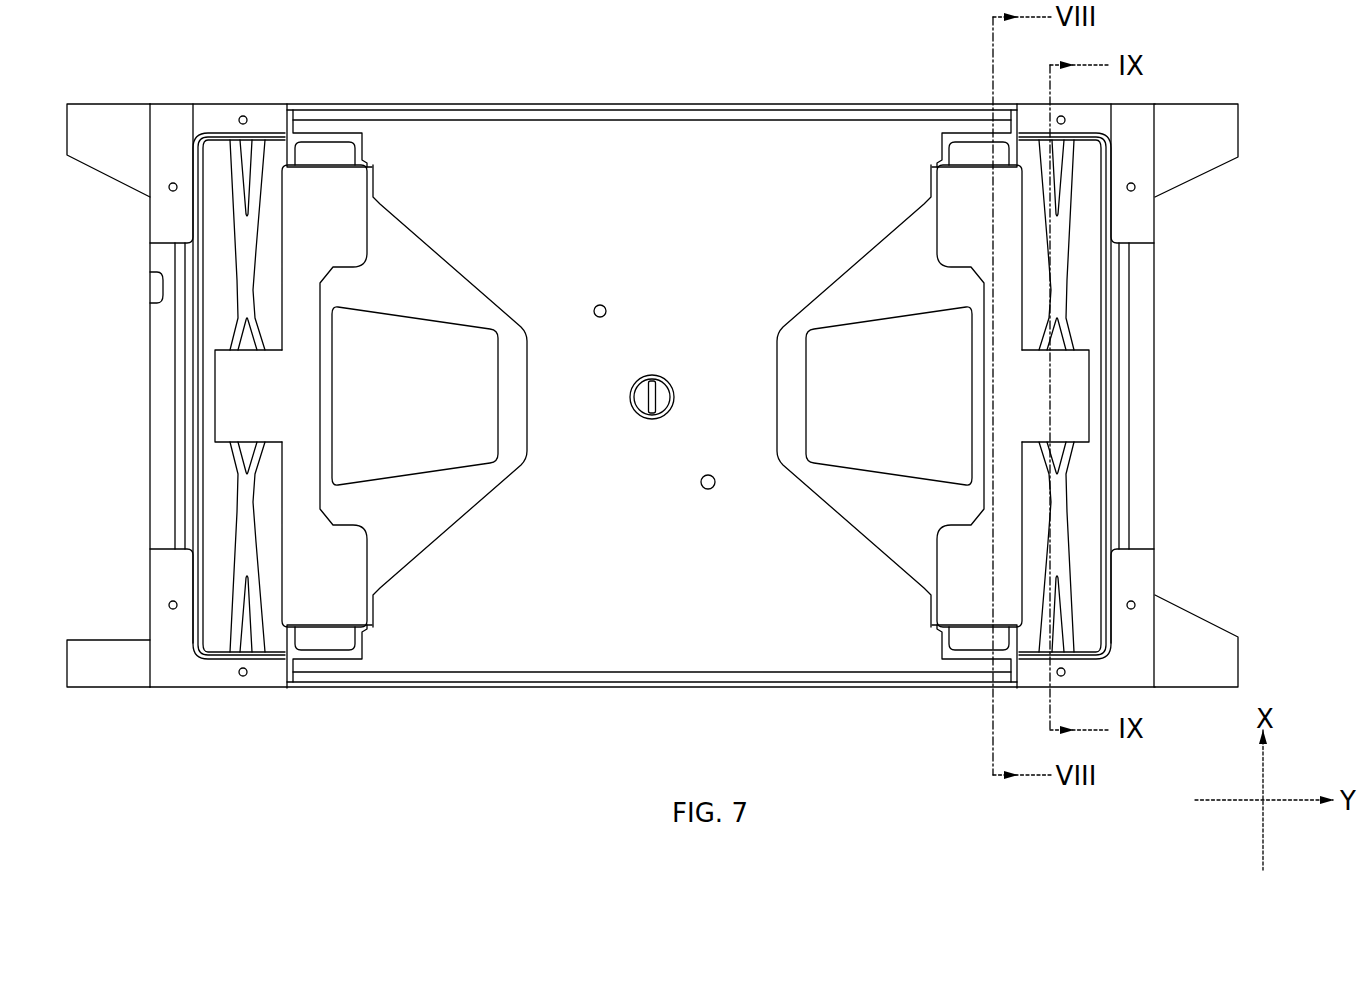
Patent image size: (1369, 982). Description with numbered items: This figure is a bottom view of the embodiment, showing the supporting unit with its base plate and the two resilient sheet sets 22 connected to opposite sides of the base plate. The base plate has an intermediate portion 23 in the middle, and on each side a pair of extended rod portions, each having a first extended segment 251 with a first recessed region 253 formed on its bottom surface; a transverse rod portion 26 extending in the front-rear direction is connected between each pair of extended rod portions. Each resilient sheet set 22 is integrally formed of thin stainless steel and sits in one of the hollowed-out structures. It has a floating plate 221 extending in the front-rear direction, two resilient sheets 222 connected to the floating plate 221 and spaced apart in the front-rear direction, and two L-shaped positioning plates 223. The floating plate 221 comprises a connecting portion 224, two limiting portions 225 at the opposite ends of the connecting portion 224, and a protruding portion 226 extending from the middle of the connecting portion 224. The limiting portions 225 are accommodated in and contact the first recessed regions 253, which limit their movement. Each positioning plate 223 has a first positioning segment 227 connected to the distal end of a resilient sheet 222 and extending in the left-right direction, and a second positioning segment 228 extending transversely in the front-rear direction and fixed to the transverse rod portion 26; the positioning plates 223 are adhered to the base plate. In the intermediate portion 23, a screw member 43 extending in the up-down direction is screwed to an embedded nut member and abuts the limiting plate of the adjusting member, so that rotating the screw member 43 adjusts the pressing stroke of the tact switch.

The resilient sheet set 22 is at (371, 556).
The intermediate portion 23 is at (725, 385).
The transverse rod portion 26 is at (157, 455).
The screw member 43 is at (665, 373).
The floating plate 221 is at (345, 591).
The resilient sheet 222 is at (243, 287).
The positioning plate 223 is at (165, 118).
The connecting portion 224 is at (302, 397).
The limiting portion 225 is at (330, 148).
The protruding portion 226 is at (227, 403).
The first positioning segment 227 is at (230, 132).
The second positioning segment 228 is at (160, 222).
The first extended segment 251 is at (312, 142).
The first recessed region 253 is at (360, 136).